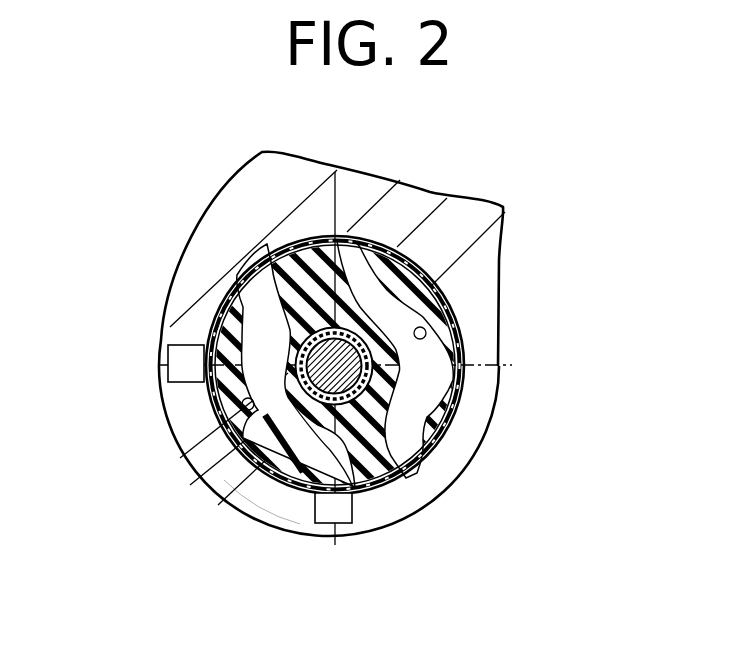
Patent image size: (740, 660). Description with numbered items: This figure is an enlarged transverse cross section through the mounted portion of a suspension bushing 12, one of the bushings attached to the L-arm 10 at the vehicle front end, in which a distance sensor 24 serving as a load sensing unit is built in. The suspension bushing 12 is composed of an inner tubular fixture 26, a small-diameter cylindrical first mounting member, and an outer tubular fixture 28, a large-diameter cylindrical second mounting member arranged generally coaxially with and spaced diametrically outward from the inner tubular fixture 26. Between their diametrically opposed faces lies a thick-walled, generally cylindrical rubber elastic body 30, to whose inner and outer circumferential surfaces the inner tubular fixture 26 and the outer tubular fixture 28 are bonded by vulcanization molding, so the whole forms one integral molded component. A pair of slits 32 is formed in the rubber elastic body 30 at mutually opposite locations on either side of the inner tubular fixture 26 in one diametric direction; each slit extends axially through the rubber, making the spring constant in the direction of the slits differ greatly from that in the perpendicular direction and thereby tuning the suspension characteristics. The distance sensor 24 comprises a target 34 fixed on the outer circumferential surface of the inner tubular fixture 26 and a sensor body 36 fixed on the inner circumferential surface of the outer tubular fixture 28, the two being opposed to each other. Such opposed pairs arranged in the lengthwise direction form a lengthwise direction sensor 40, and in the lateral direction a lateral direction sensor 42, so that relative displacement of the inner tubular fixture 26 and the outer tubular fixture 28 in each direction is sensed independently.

The L-arm 10 is at (482, 228).
The suspension bushing 12 is at (463, 324).
The distance sensor 24 is at (101, 467).
The inner tubular fixture 26 is at (226, 478).
The outer tubular fixture 28 is at (343, 238).
The rubber elastic body 30 is at (290, 267).
The slits 32 is at (460, 337).
The target 34 is at (440, 452).
The sensor body 36 is at (186, 352).
The lengthwise direction sensor 40 is at (313, 531).
The lateral direction sensor 42 is at (184, 386).